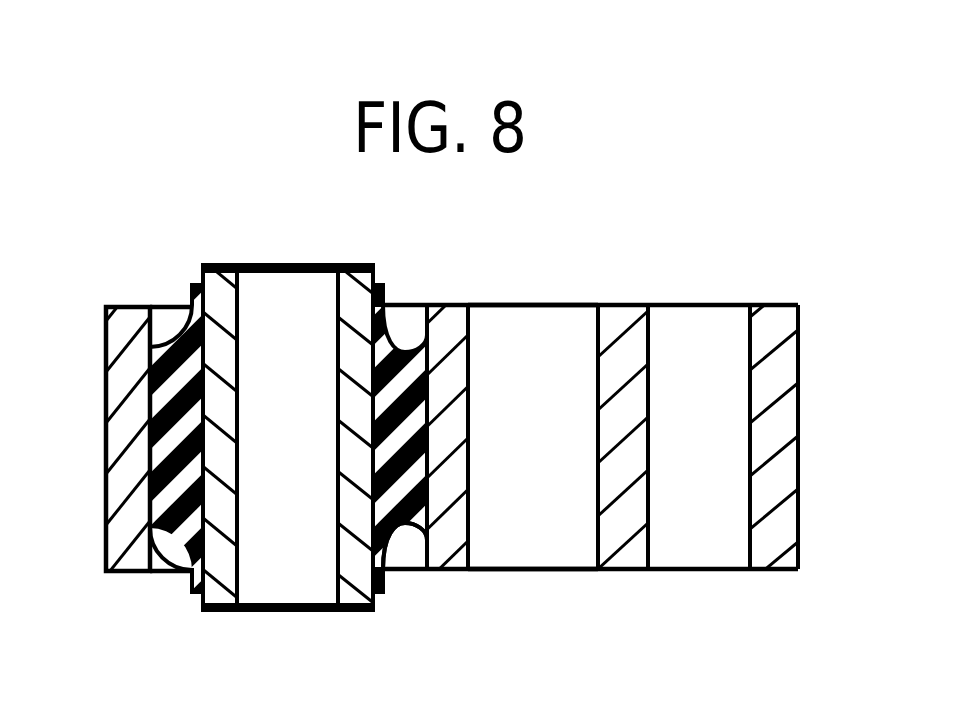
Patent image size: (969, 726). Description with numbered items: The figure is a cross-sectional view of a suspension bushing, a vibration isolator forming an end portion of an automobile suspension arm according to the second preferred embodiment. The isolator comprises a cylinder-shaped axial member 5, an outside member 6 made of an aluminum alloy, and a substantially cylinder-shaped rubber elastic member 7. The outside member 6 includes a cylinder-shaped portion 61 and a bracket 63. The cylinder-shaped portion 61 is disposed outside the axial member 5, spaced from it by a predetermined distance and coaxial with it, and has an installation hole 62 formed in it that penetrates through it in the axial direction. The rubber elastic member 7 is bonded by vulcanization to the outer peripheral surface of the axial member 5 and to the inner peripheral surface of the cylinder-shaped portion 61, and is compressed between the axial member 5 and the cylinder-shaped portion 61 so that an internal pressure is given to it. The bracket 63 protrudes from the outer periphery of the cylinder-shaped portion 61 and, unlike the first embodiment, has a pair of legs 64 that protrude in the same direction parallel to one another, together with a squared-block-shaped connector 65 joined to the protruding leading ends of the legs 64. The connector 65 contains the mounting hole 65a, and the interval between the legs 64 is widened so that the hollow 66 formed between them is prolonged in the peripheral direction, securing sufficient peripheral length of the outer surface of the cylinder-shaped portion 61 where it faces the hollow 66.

The axial member 5 is at (221, 295).
The outside member 6 is at (476, 291).
The rubber elastic member 7 is at (187, 378).
The cylinder-shaped portion 61 is at (447, 327).
The installation hole 62 is at (425, 524).
The bracket 63 is at (620, 295).
The legs 64 is at (540, 348).
The connector 65 is at (766, 333).
The mounting hole 65a is at (750, 509).
The hollow 66 is at (600, 509).